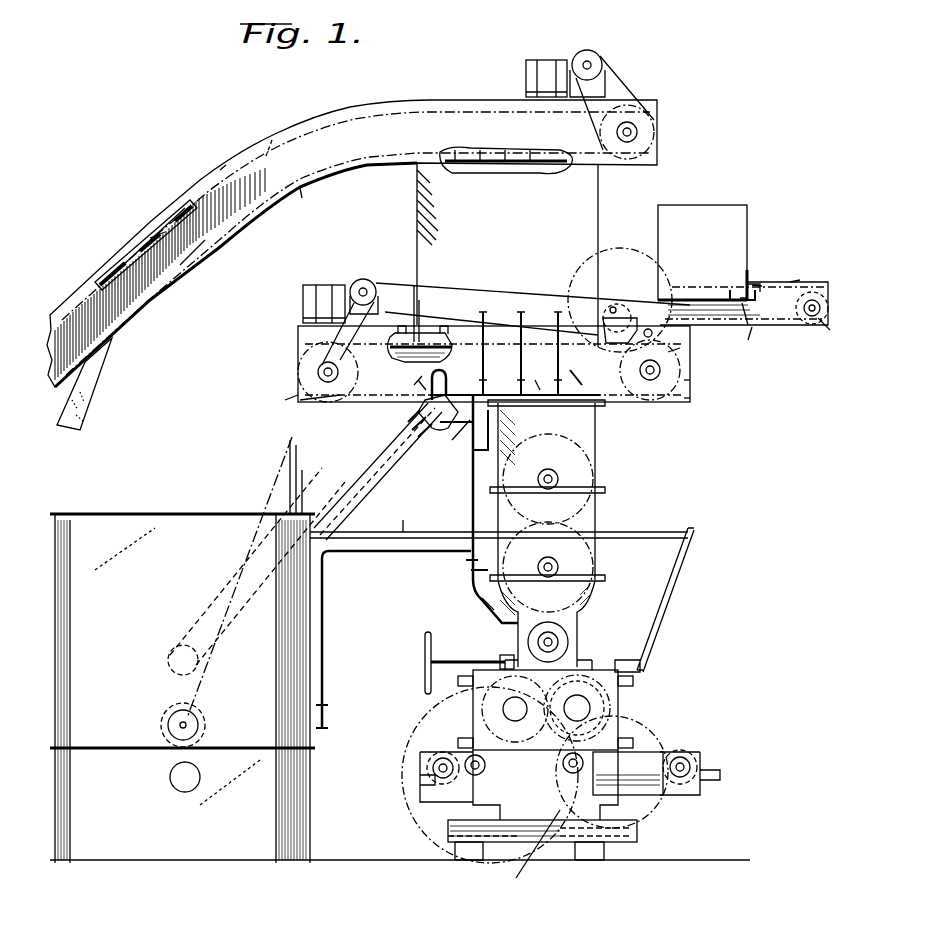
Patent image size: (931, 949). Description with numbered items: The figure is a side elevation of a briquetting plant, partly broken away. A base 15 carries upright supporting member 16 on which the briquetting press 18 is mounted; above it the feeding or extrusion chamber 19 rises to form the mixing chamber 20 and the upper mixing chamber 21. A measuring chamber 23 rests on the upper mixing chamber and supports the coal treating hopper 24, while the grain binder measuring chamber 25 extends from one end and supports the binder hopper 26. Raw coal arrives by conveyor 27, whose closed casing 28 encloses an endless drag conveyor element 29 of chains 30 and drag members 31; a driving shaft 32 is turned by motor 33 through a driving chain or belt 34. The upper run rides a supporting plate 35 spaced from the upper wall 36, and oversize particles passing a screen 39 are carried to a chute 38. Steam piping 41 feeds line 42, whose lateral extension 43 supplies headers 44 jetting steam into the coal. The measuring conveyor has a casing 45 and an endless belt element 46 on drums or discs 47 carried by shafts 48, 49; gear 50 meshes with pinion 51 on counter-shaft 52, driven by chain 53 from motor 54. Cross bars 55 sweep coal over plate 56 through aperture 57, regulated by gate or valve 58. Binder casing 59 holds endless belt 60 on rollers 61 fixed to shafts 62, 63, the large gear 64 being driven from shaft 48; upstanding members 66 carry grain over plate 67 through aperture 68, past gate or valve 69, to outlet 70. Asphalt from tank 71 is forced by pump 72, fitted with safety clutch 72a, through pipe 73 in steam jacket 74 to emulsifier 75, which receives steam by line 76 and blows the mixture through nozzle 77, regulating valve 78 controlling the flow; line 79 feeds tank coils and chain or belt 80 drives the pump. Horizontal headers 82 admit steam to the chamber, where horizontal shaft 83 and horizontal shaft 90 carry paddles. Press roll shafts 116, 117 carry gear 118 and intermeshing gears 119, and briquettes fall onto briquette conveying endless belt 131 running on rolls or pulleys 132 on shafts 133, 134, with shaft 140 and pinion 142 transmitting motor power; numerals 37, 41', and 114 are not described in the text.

The base 15 is at (630, 842).
The upright supporting member 16 is at (531, 849).
The briquetting press 18 is at (590, 710).
The feeding or extrusion chamber 19 is at (578, 628).
The mixing chamber 20 is at (575, 548).
The upper mixing chamber 21 is at (585, 433).
The measuring chamber 23 is at (600, 403).
The coal treating hopper 24 is at (590, 222).
The grain binder measuring chamber 25 is at (790, 327).
The binder hopper 26 is at (722, 212).
The conveyor 27 is at (382, 112).
The closed casing 28 is at (660, 105).
The endless drag conveyor element 29 is at (272, 140).
The chains 30 is at (500, 165).
The drag members 31 is at (168, 222).
The driving shaft 32 is at (638, 130).
The motor 33 is at (548, 62).
The driving chain or belt 34 is at (612, 85).
The supporting plate 35 is at (205, 240).
The upper wall 36 is at (218, 172).
The conveyor edge 37 is at (185, 300).
The chute 38 is at (92, 384).
The screen 39 is at (470, 150).
The piping 41 is at (453, 579).
The pipe outlet 41' is at (473, 618).
The steam line 42 is at (469, 492).
The lateral extension 43 is at (536, 393).
The headers 44 is at (484, 340).
The casing 45 is at (368, 402).
The endless belt element 46 is at (575, 378).
The drums or discs 47 is at (318, 374).
The shaft 48 is at (690, 382).
The shaft 49 is at (298, 398).
The gear 50 is at (688, 400).
The pinion 51 is at (680, 348).
The counter-shaft 52 is at (658, 335).
The chain 53 is at (520, 292).
The motor 54 is at (303, 296).
The cross bars 55 is at (445, 328).
The plate 56 is at (395, 352).
The aperture 57 is at (420, 330).
The gate or valve 58 is at (378, 290).
The casing 59 is at (795, 282).
The endless belt 60 is at (760, 285).
The rollers 61 is at (270, 436).
The shaft 62 is at (616, 308).
The shaft 63 is at (816, 318).
The large gear 64 is at (624, 252).
The upstanding members 66 is at (762, 290).
The plate 67 is at (752, 330).
The aperture 68 is at (738, 292).
The gate or valve 69 is at (745, 292).
The outlet 70 is at (603, 330).
The tank 71 is at (305, 662).
The pump 72 is at (206, 724).
The safety or overload clutch 72a is at (196, 668).
The pipe 73 is at (362, 482).
The steam jacket 74 is at (385, 458).
The emulsifier 75 is at (412, 418).
The line 76 is at (455, 385).
The nozzle 77 is at (480, 418).
The regulating valve 78 is at (420, 392).
The line 79 is at (398, 540).
The chain or belt 80 is at (288, 476).
The horizontal headers 82 is at (482, 452).
The horizontal shaft 83 is at (560, 478).
The horizontal shaft 90 is at (560, 566).
The briquetting roll 114 is at (590, 740).
The press roll shaft 116 is at (505, 716).
The press roll shaft 117 is at (578, 700).
The gear 118 is at (645, 660).
The intermeshing gears 119 is at (475, 700).
The briquette conveying endless belt 131 is at (650, 755).
The rolls or pulleys 132 is at (432, 758).
The shaft 133 is at (720, 775).
The shaft 134 is at (440, 772).
The shaft 140 is at (472, 772).
The pinion 142 is at (486, 766).